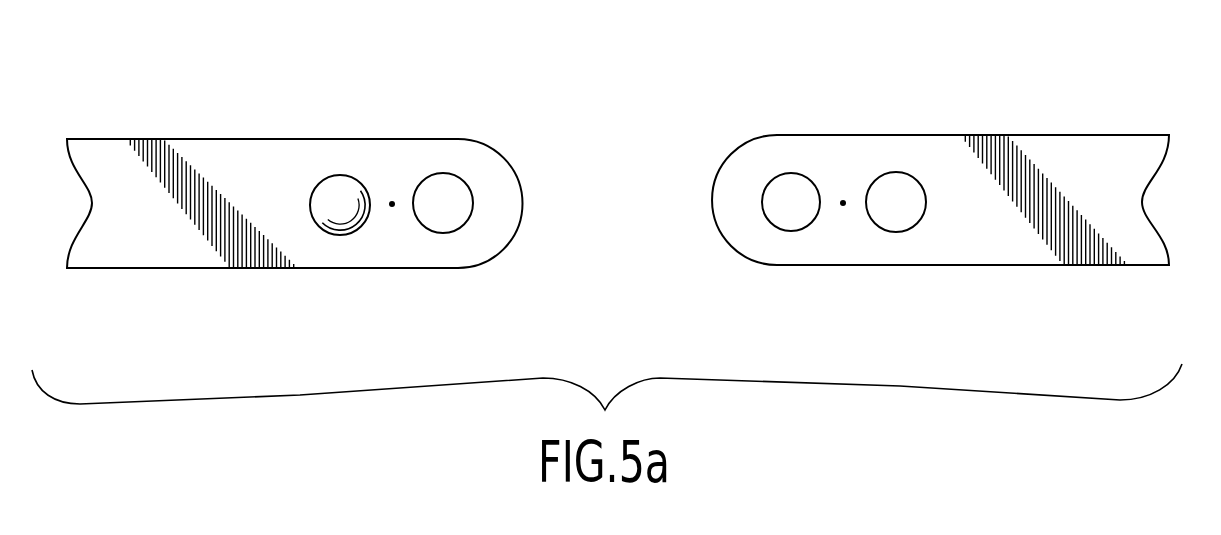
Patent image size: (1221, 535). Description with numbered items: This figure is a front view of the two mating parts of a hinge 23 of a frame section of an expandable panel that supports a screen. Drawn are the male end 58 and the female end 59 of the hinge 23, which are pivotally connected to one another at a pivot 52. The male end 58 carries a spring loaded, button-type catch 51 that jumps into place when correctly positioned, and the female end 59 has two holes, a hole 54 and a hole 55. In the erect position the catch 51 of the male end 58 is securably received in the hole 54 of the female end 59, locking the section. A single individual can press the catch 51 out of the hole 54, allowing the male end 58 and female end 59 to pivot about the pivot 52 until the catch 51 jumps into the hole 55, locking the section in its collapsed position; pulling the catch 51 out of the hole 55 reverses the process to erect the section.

The hinge 23 is at (627, 135).
The spring loaded, button-type catch 51 is at (340, 175).
The pivot 52 is at (392, 204).
The hole 54 is at (791, 173).
The hole 55 is at (896, 172).
The male end 58 is at (127, 138).
The female end 59 is at (1000, 266).